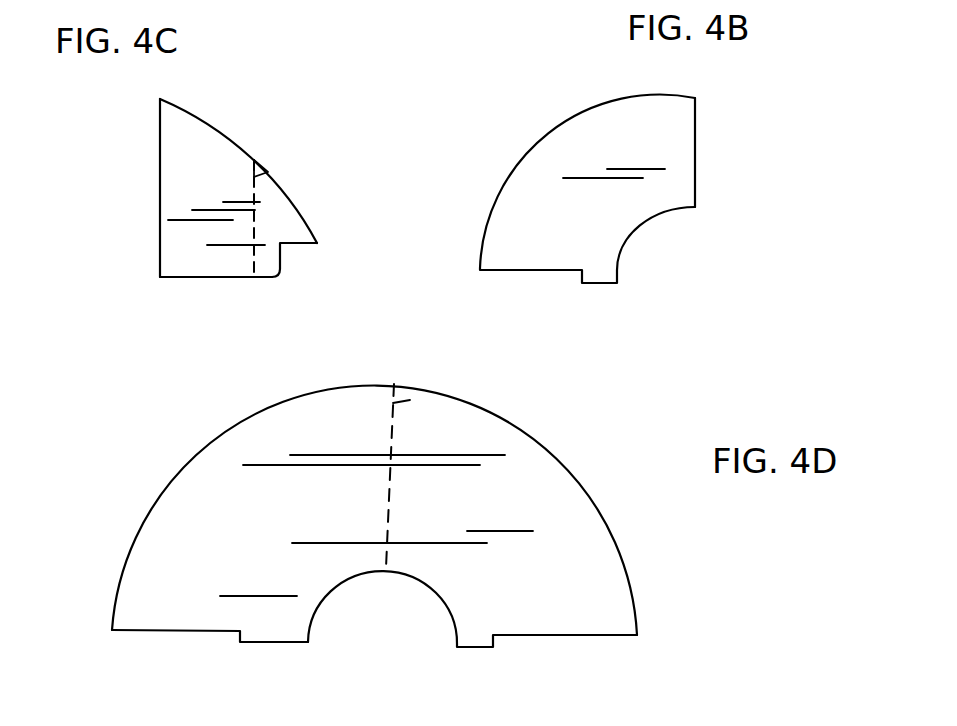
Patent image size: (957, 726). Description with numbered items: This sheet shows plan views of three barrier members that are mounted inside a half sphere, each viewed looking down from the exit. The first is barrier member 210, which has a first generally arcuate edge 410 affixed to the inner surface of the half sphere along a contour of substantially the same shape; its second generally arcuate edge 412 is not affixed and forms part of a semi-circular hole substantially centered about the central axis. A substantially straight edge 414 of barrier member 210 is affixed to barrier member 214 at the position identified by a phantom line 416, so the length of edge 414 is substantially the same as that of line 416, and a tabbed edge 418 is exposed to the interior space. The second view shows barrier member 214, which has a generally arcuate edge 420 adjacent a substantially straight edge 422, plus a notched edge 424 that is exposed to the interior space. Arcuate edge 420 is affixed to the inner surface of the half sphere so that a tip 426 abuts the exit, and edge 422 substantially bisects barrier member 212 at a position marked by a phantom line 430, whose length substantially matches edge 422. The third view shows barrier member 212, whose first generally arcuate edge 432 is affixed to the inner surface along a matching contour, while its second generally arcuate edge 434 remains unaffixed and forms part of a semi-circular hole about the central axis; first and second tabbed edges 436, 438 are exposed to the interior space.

In FIG. 4B, the barrier member 210 is at (845, 134).
In FIG. 4D, the barrier member 212 is at (415, 723).
In FIG. 4C, the barrier member 214 is at (90, 151).
In FIG. 4B, the first generally arcuate edge 410 is at (555, 128).
In FIG. 4B, the second generally arcuate edge 412 is at (642, 232).
In FIG. 4B, the substantially straight edge 414 is at (695, 148).
In FIG. 4C, the line 416 is at (278, 164).
In FIG. 4B, the tabbed edge 418 is at (557, 270).
In FIG. 4C, the generally arcuate edge 420 is at (215, 130).
In FIG. 4C, the substantially straight edge 422 is at (160, 213).
In FIG. 4C, the notched edge 424 is at (210, 277).
In FIG. 4C, the tip 426 is at (317, 243).
In FIG. 4D, the line 430 is at (425, 393).
In FIG. 4D, the first generally arcuate edge 432 is at (248, 412).
In FIG. 4D, the second generally arcuate edge 434 is at (335, 590).
In FIG. 4D, the first tabbed edge 436 is at (248, 642).
In FIG. 4D, the second tabbed edge 438 is at (537, 636).